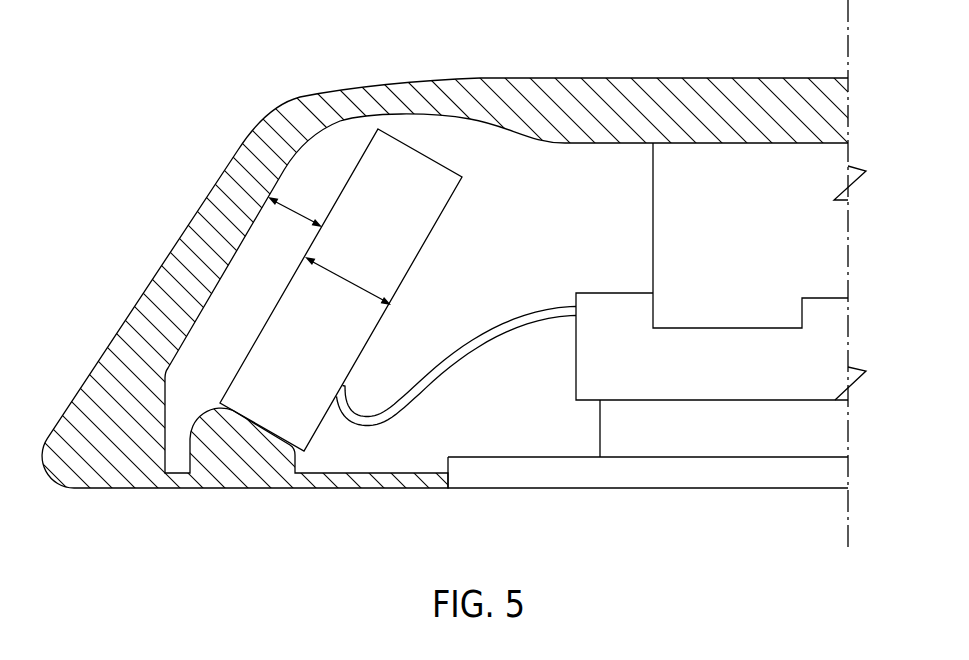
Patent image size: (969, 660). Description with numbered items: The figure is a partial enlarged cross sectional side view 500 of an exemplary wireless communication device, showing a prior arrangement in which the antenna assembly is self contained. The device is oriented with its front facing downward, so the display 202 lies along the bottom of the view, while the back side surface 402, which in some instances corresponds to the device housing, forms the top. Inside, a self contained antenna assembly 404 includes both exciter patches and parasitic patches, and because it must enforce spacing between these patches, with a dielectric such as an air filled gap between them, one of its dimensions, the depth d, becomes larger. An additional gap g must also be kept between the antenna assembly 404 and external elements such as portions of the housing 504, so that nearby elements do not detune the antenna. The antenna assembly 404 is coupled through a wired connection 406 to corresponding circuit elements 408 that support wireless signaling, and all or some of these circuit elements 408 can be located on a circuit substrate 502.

The partial enlarged cross sectional side view 500 is at (168, 68).
The back side surface 402 is at (546, 77).
The housing 504 is at (226, 192).
The self contained parasitic patch antenna assembly 404 is at (410, 242).
The wired connection 406 is at (447, 364).
The circuit elements 408 is at (830, 328).
The circuit substrate 502 is at (832, 430).
The display 202 is at (662, 480).